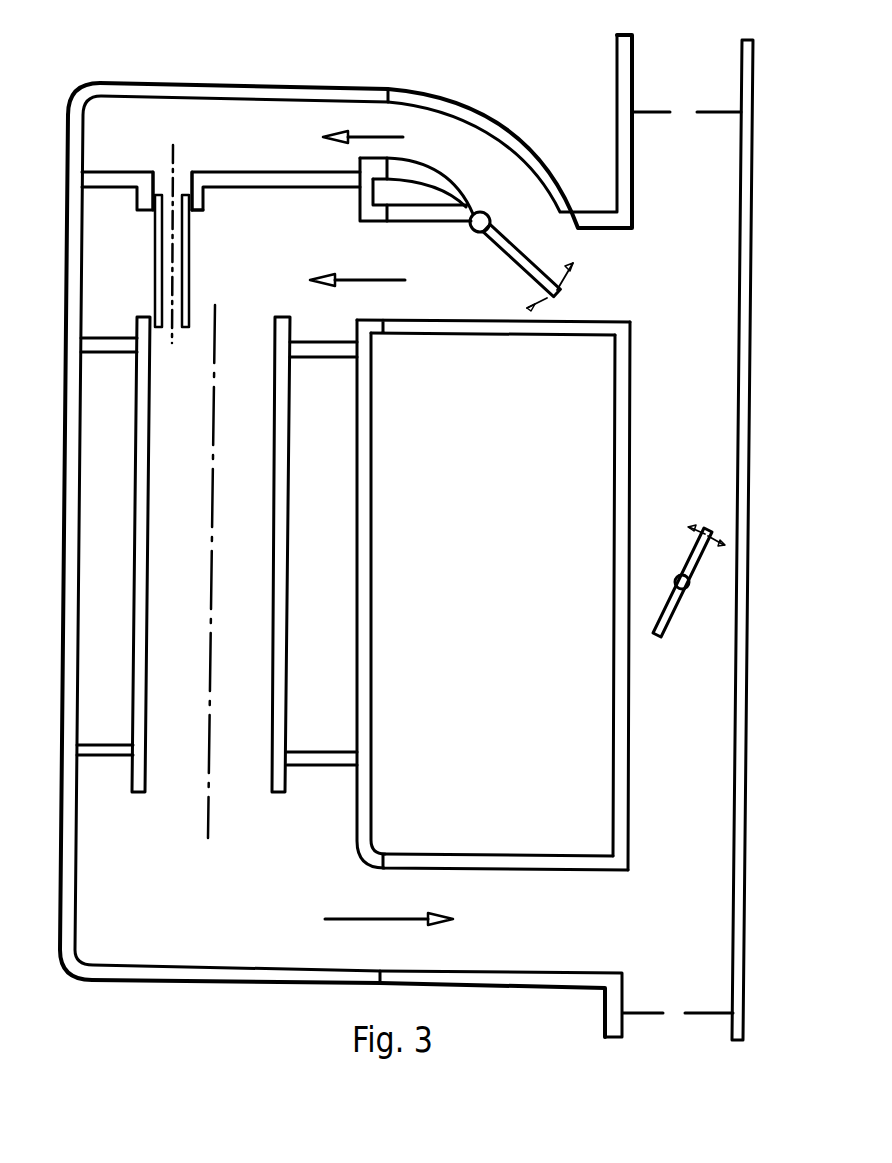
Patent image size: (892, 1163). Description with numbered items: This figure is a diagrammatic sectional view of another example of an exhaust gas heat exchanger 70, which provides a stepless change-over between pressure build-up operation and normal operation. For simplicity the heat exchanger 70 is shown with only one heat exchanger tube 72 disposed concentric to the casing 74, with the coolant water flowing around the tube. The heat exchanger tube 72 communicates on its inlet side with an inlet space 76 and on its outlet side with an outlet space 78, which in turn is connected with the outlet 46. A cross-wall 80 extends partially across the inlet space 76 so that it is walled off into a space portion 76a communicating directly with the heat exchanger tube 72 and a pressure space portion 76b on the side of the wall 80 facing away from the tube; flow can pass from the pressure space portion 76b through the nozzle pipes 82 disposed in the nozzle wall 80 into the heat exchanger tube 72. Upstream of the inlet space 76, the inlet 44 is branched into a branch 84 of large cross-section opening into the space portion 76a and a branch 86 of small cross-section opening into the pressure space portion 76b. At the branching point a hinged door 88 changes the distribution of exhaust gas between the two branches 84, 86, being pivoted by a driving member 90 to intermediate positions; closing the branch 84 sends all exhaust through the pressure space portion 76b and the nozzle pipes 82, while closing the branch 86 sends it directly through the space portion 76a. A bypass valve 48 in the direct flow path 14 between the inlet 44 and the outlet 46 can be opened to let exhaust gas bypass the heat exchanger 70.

The direct flow path 14 is at (728, 168).
The inlet 44 is at (582, 313).
The outlet 46 is at (515, 883).
The bypass valve 48 is at (690, 600).
The heat exchanger 70 is at (344, 56).
The heat exchanger tube 72 is at (282, 527).
The casing 74 is at (493, 598).
The inlet space 76 is at (303, 229).
The space portion 76a is at (284, 261).
The pressure space portion 76b is at (157, 162).
The outlet space 78 is at (216, 896).
The cross-wall 80 is at (240, 172).
The nozzle pipes 82 is at (192, 293).
The branch 84 is at (438, 285).
The branch 86 is at (460, 167).
The door 88 is at (517, 254).
The driving member 90 is at (492, 216).